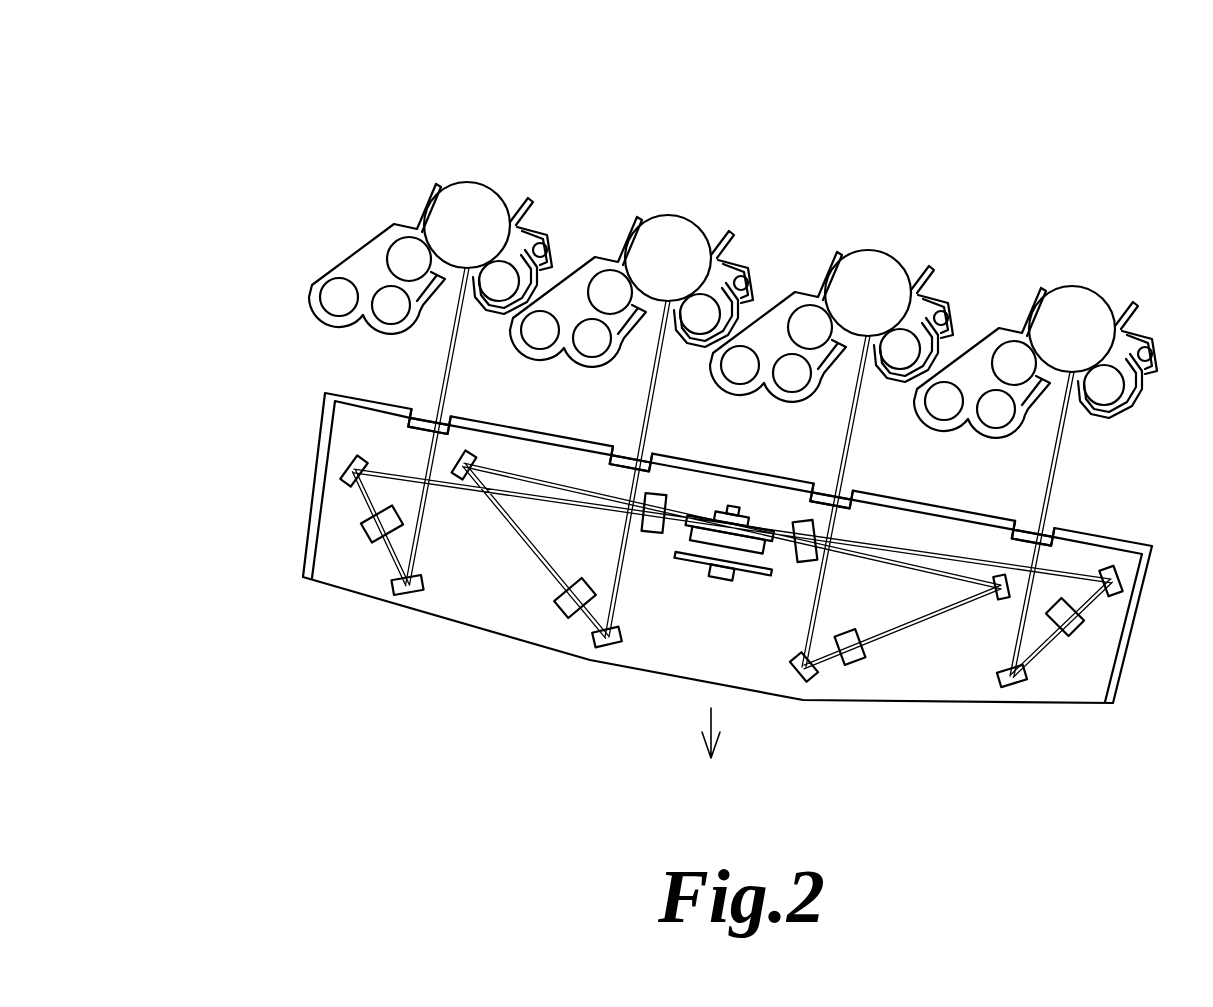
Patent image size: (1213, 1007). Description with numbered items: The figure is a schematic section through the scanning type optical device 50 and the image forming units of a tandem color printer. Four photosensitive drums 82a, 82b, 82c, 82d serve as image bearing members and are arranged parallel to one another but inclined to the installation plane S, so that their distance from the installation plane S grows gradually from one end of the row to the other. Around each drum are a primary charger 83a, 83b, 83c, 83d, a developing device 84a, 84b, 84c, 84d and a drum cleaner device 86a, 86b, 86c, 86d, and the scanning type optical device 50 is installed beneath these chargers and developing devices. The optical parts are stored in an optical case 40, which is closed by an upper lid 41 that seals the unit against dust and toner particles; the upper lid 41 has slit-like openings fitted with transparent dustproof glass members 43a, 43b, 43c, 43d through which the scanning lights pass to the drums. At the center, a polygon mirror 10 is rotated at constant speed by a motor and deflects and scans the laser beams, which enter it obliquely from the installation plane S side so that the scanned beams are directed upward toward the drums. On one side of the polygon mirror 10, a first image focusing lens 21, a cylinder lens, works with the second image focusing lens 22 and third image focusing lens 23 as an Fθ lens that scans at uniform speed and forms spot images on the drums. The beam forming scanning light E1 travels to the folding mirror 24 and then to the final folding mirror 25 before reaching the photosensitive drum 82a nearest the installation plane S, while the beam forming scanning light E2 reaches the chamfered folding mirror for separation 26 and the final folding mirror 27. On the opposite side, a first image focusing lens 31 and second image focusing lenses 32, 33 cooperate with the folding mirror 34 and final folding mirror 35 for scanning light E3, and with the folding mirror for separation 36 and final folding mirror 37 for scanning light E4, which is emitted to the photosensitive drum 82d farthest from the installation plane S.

The polygon mirror 10 is at (753, 521).
The first image focusing lens 21 is at (797, 565).
The first image focusing lens 31 is at (655, 534).
The second image focusing lens 22 is at (1078, 631).
The third image focusing lens 23 is at (862, 660).
The second image focusing lens 32 is at (561, 602).
The second image focusing lens 33 is at (370, 542).
The folding mirror 24 is at (1106, 570).
The final folding mirror 25 is at (1000, 675).
The folding mirror for separation 26 is at (995, 598).
The final folding mirror 27 is at (789, 668).
The folding mirror 34 is at (473, 456).
The final folding mirror 35 is at (620, 636).
The folding mirror for separation 36 is at (362, 457).
The final folding mirror 37 is at (423, 593).
The optical case 40 is at (305, 528).
The upper lid 41 is at (322, 425).
The dustproof glass member 43a is at (1058, 524).
The dustproof glass member 43b is at (858, 488).
The dustproof glass member 43c is at (658, 450).
The dustproof glass member 43d is at (460, 415).
The scanning type optical device 50 is at (652, 543).
The photosensitive drum 82a is at (1072, 278).
The photosensitive drum 82b is at (868, 242).
The photosensitive drum 82c is at (668, 207).
The photosensitive drum 82d is at (467, 174).
The primary charger 83a is at (1114, 280).
The primary charger 83b is at (910, 244).
The primary charger 83c is at (709, 209).
The primary charger 83d is at (509, 176).
The developing device 84a is at (982, 284).
The developing device 84b is at (778, 248).
The developing device 84c is at (578, 213).
The developing device 84d is at (377, 180).
The drum cleaner device 86a is at (1158, 288).
The drum cleaner device 86b is at (954, 252).
The drum cleaner device 86c is at (753, 217).
The drum cleaner device 86d is at (553, 184).
The scanning light E1 is at (1056, 455).
The scanning light E2 is at (852, 420).
The scanning light E3 is at (653, 383).
The scanning light E4 is at (453, 347).
The installation plane S is at (712, 756).